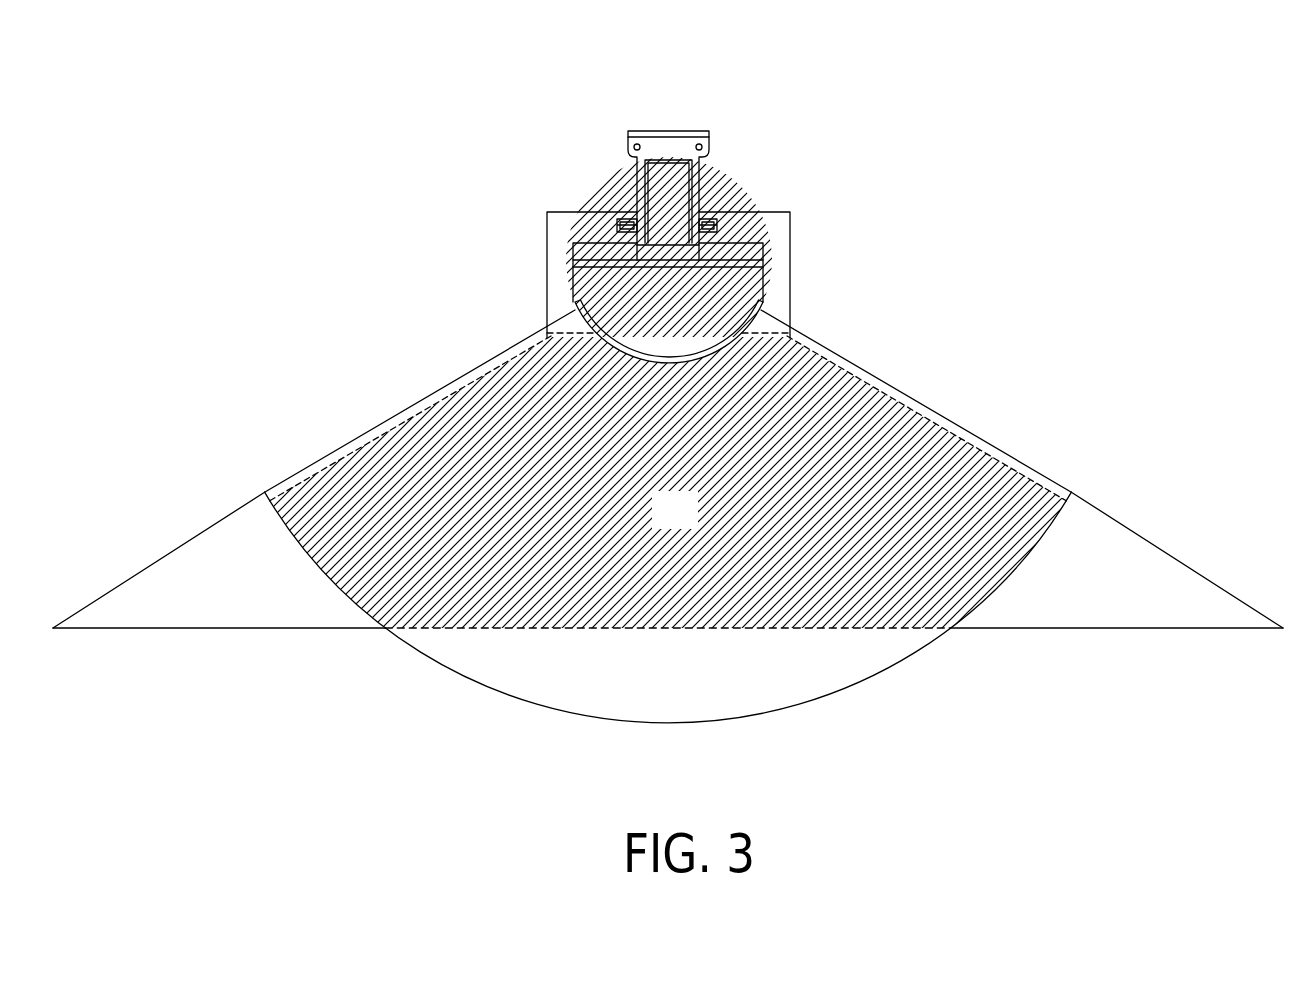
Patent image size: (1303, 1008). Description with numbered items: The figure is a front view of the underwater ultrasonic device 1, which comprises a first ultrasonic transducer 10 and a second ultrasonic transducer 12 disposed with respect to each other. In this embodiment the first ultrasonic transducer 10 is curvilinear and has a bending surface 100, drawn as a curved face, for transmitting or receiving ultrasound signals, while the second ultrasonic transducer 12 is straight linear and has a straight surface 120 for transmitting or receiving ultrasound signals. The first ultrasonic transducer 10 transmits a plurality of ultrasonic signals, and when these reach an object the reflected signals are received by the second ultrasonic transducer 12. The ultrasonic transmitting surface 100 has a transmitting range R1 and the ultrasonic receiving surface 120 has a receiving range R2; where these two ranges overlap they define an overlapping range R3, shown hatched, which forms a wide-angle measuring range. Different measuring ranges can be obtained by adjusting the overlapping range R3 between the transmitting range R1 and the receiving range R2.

The underwater ultrasonic device 1 is at (982, 132).
The first ultrasonic transducer 10 is at (763, 278).
The second ultrasonic transducer 12 is at (790, 233).
The bending surface 100 is at (607, 360).
The straight surface 120 is at (765, 342).
The transmitting range R1 is at (982, 437).
The receiving range R2 is at (1150, 548).
The overlapping range R3 is at (692, 523).